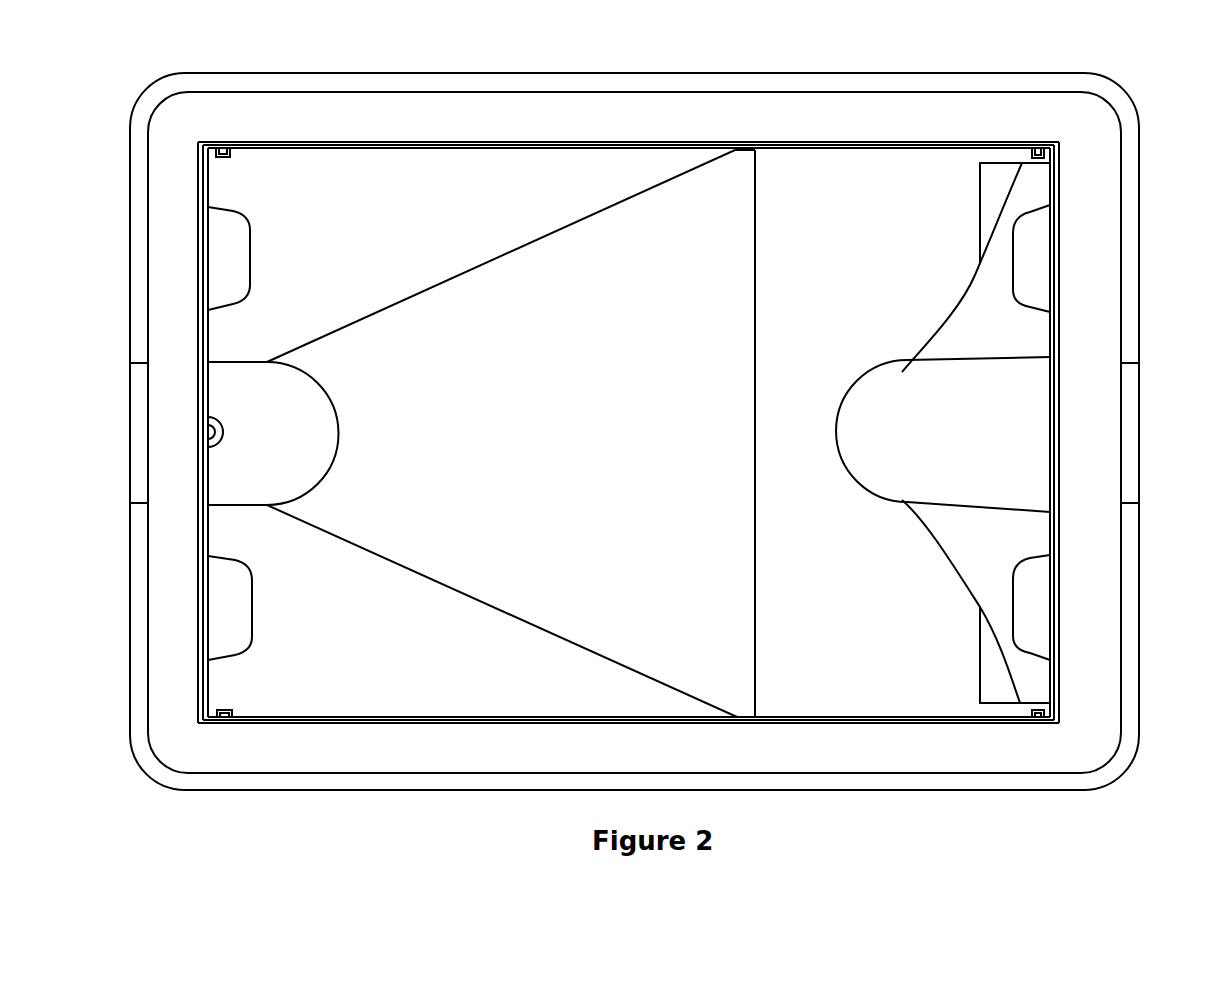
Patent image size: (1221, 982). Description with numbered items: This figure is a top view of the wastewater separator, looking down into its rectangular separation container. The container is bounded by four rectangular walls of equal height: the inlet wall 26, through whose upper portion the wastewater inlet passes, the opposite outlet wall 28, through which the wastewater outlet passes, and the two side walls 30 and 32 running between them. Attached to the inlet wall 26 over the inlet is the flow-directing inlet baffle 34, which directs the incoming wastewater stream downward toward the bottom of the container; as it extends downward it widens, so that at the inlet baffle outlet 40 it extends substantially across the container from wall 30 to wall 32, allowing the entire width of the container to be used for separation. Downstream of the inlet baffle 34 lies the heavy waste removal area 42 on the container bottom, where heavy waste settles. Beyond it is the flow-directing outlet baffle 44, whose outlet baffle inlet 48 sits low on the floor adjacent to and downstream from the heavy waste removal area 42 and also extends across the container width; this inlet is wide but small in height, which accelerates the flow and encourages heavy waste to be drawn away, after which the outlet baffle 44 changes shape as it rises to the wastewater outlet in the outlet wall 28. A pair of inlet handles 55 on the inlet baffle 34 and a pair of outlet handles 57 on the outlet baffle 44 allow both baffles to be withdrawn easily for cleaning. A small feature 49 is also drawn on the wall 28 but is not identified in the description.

The inlet wall 26 is at (1055, 608).
The outlet wall 28 is at (208, 591).
The wall 30 is at (585, 148).
The wall 32 is at (520, 720).
The flow-directing inlet baffle 34 is at (952, 310).
The inlet baffle outlet 40 is at (980, 682).
The heavy waste removal area 42 is at (800, 188).
The flow-directing outlet baffle 44 is at (428, 290).
The outlet baffle inlet 48 is at (760, 165).
The pivot 49 is at (216, 430).
The inlet handles 55 is at (1040, 212).
The outlet handles 57 is at (250, 215).